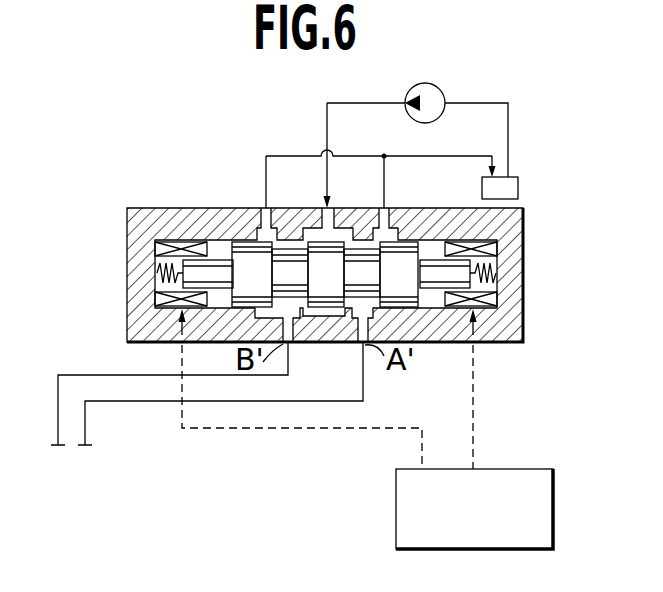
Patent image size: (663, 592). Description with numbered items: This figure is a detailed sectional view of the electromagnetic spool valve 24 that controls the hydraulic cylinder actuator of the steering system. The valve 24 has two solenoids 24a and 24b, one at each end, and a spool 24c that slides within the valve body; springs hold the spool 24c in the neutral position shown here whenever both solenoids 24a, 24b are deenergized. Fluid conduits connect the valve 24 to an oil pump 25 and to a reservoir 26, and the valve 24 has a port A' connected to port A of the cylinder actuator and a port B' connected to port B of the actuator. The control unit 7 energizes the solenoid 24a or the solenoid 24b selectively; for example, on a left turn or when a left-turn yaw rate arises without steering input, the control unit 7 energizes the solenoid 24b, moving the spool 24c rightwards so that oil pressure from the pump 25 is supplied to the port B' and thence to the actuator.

The electromagnetic spool valve 24 is at (173, 208).
The solenoid 24a is at (155, 298).
The solenoid 24b is at (497, 300).
The spool 24c is at (238, 230).
The oil pump 25 is at (440, 90).
The reservoir 26 is at (518, 188).
The control unit 7 is at (553, 497).